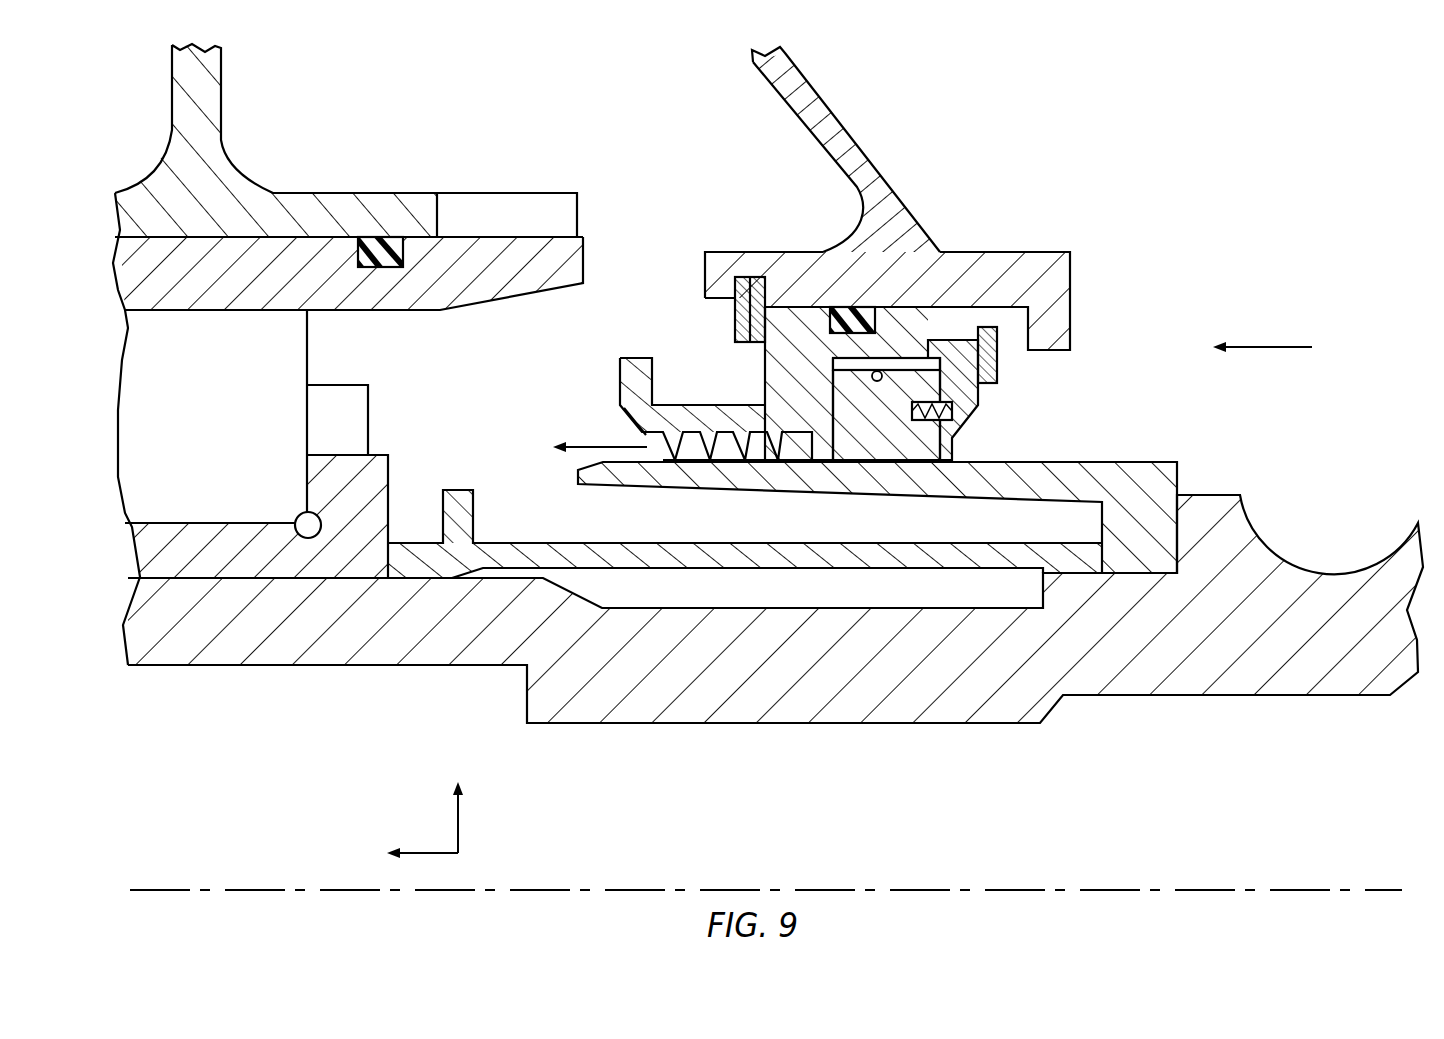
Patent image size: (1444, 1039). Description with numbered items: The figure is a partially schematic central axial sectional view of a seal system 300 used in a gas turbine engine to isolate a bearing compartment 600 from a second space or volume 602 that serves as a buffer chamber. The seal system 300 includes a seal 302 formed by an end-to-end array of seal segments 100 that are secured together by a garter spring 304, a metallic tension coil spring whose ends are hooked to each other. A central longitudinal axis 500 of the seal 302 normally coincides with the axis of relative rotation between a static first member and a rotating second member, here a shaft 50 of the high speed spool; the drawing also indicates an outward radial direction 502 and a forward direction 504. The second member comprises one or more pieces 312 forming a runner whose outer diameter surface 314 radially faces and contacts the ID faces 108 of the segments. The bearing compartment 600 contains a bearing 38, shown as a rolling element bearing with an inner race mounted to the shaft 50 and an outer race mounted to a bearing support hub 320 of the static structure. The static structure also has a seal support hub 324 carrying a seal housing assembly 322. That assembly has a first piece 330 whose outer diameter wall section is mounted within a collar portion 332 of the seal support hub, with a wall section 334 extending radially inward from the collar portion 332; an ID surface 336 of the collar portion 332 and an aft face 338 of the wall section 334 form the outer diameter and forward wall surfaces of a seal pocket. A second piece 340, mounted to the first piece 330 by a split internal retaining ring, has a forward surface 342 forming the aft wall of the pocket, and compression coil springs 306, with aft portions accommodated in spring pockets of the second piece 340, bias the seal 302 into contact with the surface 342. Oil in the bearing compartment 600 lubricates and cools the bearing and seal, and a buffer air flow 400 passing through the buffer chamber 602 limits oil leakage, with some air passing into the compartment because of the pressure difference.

The bearing 38 is at (403, 376).
The shaft 50 is at (940, 680).
The seal segment 100 is at (943, 441).
The ID face 108 is at (882, 464).
The seal system 300 is at (1128, 338).
The seal 302 is at (952, 347).
The garter spring 304 is at (877, 370).
The compression coil spring 306 is at (950, 405).
The runner piece 312 is at (1117, 480).
The OD surface 314 is at (1053, 461).
The bearing support hub 320 is at (245, 123).
The seal housing assembly 322 is at (910, 300).
The seal support hub 324 is at (860, 118).
The first piece 330 is at (765, 368).
The collar portion 332 is at (887, 238).
The wall section 334 is at (775, 362).
The ID surface 336 is at (800, 398).
The aft face 338 is at (820, 464).
The second piece 340 is at (960, 372).
The forward surface 342 is at (885, 395).
The buffer air flow 400 is at (587, 443).
The central longitudinal axis 500 is at (1375, 890).
The outward radial direction 502 is at (460, 830).
The forward direction 504 is at (432, 850).
The bearing compartment 600 is at (529, 413).
The buffer chamber 602 is at (1190, 392).